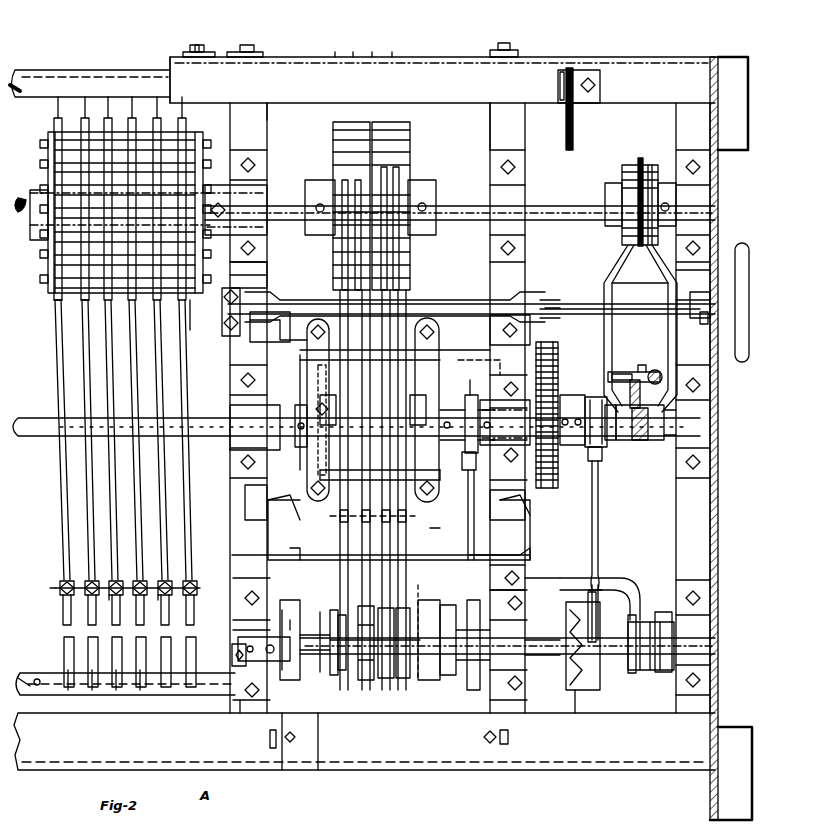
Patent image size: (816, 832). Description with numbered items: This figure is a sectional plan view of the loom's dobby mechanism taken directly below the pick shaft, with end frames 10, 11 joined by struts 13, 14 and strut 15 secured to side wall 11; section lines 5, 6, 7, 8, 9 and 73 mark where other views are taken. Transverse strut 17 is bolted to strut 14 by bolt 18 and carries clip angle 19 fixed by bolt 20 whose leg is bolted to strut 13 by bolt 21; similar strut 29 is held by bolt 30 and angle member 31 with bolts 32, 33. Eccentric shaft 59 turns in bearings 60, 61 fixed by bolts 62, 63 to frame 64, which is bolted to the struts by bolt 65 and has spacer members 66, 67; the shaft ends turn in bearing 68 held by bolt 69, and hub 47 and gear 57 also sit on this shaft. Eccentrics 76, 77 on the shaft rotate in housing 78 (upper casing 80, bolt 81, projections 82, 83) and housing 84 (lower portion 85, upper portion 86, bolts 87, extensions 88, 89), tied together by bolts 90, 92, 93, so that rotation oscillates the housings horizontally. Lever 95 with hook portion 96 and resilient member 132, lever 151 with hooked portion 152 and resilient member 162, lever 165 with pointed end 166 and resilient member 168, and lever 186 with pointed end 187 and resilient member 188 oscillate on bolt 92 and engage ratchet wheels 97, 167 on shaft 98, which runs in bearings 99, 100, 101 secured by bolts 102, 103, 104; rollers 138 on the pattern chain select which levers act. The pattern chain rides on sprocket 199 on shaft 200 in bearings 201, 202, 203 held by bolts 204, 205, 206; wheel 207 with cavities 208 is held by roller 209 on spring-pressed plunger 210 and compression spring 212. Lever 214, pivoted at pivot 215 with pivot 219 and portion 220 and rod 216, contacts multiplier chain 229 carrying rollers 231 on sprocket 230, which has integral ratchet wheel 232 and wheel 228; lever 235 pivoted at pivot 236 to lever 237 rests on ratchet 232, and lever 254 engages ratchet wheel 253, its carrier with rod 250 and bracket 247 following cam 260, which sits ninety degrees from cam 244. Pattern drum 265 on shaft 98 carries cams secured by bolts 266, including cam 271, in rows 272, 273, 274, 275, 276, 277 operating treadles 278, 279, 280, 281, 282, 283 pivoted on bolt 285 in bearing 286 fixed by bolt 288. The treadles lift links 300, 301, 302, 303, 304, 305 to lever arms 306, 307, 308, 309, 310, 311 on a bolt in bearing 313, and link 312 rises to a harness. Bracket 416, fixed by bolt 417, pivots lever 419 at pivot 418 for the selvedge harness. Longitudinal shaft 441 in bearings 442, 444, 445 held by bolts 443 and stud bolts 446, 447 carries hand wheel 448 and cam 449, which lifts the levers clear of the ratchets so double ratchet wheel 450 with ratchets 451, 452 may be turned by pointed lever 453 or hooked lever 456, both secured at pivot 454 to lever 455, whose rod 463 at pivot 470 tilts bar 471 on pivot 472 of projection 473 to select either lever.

The section line 5 is at (392, 52).
The section line 6 is at (372, 52).
The section line 7 is at (353, 52).
The section line 8 is at (335, 52).
The section line 9 is at (418, 585).
The end frame 10 is at (300, 635).
The end frame 11 is at (170, 70).
The strut 13 is at (598, 768).
The strut 14 is at (640, 62).
The strut 15 is at (715, 490).
The strut 17 is at (490, 122).
The bolt 18 is at (510, 42).
The clip angle 19 is at (488, 762).
The bolt 20 is at (504, 738).
The bolt 21 is at (483, 737).
The strut 29 is at (262, 128).
The bolt 30 is at (256, 44).
The angle member 31 is at (290, 762).
The bolt 32 is at (270, 738).
The bolt 33 is at (290, 741).
The hub 47 is at (578, 401).
The gear 57 is at (544, 342).
The eccentric shaft 59 is at (224, 415).
The bearing 60 is at (505, 422).
The bearing 61 is at (238, 380).
The bolt 62 is at (512, 380).
The bolt 63 is at (256, 368).
The frame 64 is at (244, 532).
The bolt 65 is at (495, 530).
The spacer member 66 is at (446, 300).
The spacer member 67 is at (307, 550).
The bearing 68 is at (700, 388).
The bolt 69 is at (700, 460).
The section line 73 is at (471, 382).
The eccentric 76 is at (453, 351).
The eccentric 77 is at (300, 372).
The housing 78 is at (450, 486).
The upper casing 80 is at (428, 396).
The bolt 81 is at (438, 336).
The projection 82 is at (510, 330).
The projection 83 is at (507, 505).
The housing 84 is at (306, 382).
The lower portion 85 is at (320, 474).
The upper portion 86 is at (318, 398).
The bolt 87 is at (306, 330).
The extension 88 is at (270, 327).
The extension 89 is at (244, 501).
The bolt 90 is at (370, 352).
The bolt 92 is at (318, 408).
The bolt 93 is at (359, 461).
The lever 95 is at (410, 535).
The hook portion 96 is at (400, 170).
The ratchet wheel 97 is at (400, 135).
The shaft 98 is at (560, 204).
The bearing 99 is at (706, 196).
The bearing 100 is at (490, 162).
The bearing 101 is at (248, 158).
The bolt 102 is at (696, 160).
The bolt 103 is at (510, 160).
The bolt 104 is at (258, 165).
The resilient member 132 is at (404, 690).
The rollers 138 is at (330, 680).
The lever 151 is at (412, 518).
The hooked portion 152 is at (385, 166).
The resilient member 162 is at (376, 680).
The lever 165 is at (362, 532).
The pointed end 166 is at (345, 178).
The ratchet wheel 167 is at (332, 130).
The resilient member 168 is at (365, 690).
The lever 186 is at (340, 514).
The pointed end 187 is at (358, 178).
The resilient member 188 is at (346, 680).
The sprocket 199 is at (324, 610).
The shaft 200 is at (720, 638).
The bearing 201 is at (694, 594).
The bearing 202 is at (570, 700).
The bearing 203 is at (240, 598).
The bolt 204 is at (702, 598).
The bolt 205 is at (508, 712).
The bolt 206 is at (253, 640).
The wheel 207 is at (312, 598).
The cavities 208 is at (288, 600).
The roller 209 is at (434, 653).
The plunger 210 is at (250, 636).
The compression spring 212 is at (231, 656).
The lever 214 is at (620, 580).
The pivot 215 is at (540, 578).
The rod 216 is at (586, 605).
The pivot 219 is at (430, 610).
The portion 220 is at (432, 625).
The wheel 228 is at (578, 692).
The multiplier chain 229 is at (630, 674).
The sprocket 230 is at (666, 620).
The rollers 231 is at (654, 672).
The ratchet wheel 232 is at (580, 700).
The lever 235 is at (604, 556).
The pivot 236 is at (600, 462).
The lever 237 is at (588, 462).
The cam 244 is at (596, 400).
The bracket 247 is at (514, 548).
The rod 250 is at (430, 495).
The ratchet wheel 253 is at (474, 698).
The lever 254 is at (480, 552).
The cam 260 is at (477, 386).
The pattern drum 265 is at (48, 292).
The bolts 266 is at (38, 150).
The cam 271 is at (287, 426).
The row of cams 272 is at (220, 312).
The row of cams 273 is at (220, 322).
The row of cams 274 is at (150, 312).
The row of cams 275 is at (108, 97).
The row of cams 276 is at (80, 305).
The row of cams 277 is at (58, 302).
The treadle 278 is at (190, 380).
The treadle 279 is at (168, 358).
The treadle 280 is at (140, 440).
The treadle 281 is at (112, 440).
The treadle 282 is at (82, 370).
The treadle 283 is at (62, 355).
The bolt 285 is at (20, 72).
The bearing 286 is at (205, 48).
The bolt 288 is at (200, 44).
The link 300 is at (367, 555).
The link 301 is at (158, 605).
The link 302 is at (155, 580).
The link 303 is at (127, 605).
The link 304 is at (66, 580).
The link 305 is at (60, 596).
The lever arm 306 is at (192, 690).
The lever arm 307 is at (155, 689).
The lever arm 308 is at (138, 690).
The lever arm 309 is at (109, 689).
The lever arm 310 is at (88, 690).
The lever arm 311 is at (125, 690).
The link 312 is at (34, 678).
The bearing 313 is at (251, 712).
The bracket 416 is at (600, 86).
The bolt 417 is at (607, 81).
The pivot 418 is at (557, 82).
The lever 419 is at (566, 120).
The longitudinal shaft 441 is at (620, 298).
The bearing 442 is at (693, 291).
The bolts 443 is at (700, 320).
The bearing 444 is at (548, 300).
The bearing 445 is at (248, 275).
The stud bolt 446 is at (556, 300).
The stud bolt 447 is at (580, 66).
The hand wheel 448 is at (750, 285).
The cam 449 is at (420, 300).
The ratchet wheel 450 is at (642, 156).
The ratchet 451 is at (628, 165).
The ratchet 452 is at (654, 165).
The pointed lever 453 is at (620, 278).
The pivot 454 is at (664, 420).
The lever 455 is at (618, 440).
The hooked lever 456 is at (640, 281).
The rod 463 is at (656, 368).
The pivot 470 is at (662, 368).
The bar 471 is at (608, 372).
The pivot 472 is at (624, 368).
The projection 473 is at (630, 392).